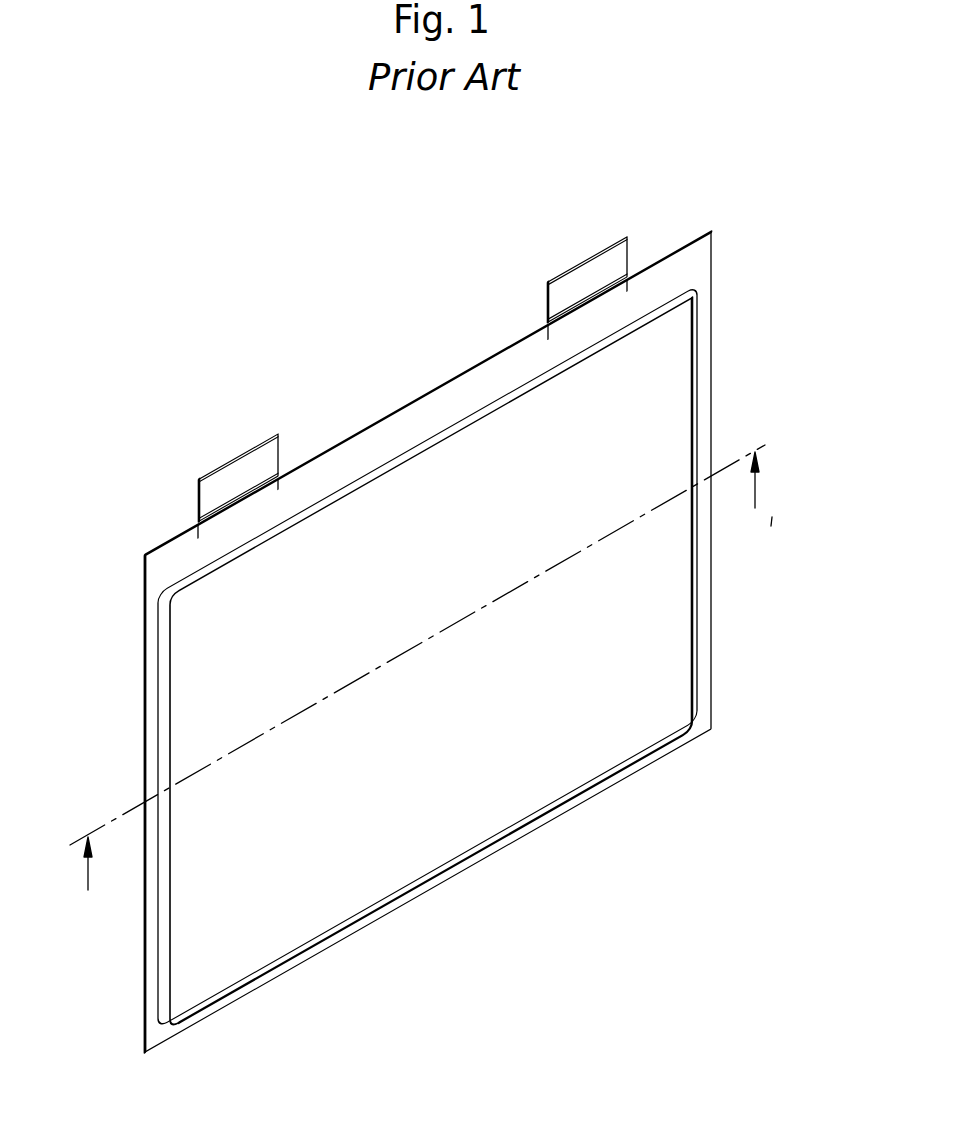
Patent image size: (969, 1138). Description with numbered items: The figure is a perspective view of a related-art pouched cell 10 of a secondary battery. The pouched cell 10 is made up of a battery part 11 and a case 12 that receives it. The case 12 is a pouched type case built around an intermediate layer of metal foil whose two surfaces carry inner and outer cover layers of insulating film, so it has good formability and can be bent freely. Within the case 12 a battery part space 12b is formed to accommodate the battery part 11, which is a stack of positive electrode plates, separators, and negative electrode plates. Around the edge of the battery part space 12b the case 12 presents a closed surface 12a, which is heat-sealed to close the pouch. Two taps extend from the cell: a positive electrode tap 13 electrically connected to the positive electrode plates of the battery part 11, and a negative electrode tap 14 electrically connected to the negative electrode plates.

The pouched cell 10 is at (350, 296).
The battery part 11 is at (678, 593).
The case 12 is at (713, 229).
The closed surface 12a is at (707, 291).
The battery part space 12b is at (678, 382).
The positive electrode tap 13 is at (238, 473).
The negative electrode tap 14 is at (585, 273).